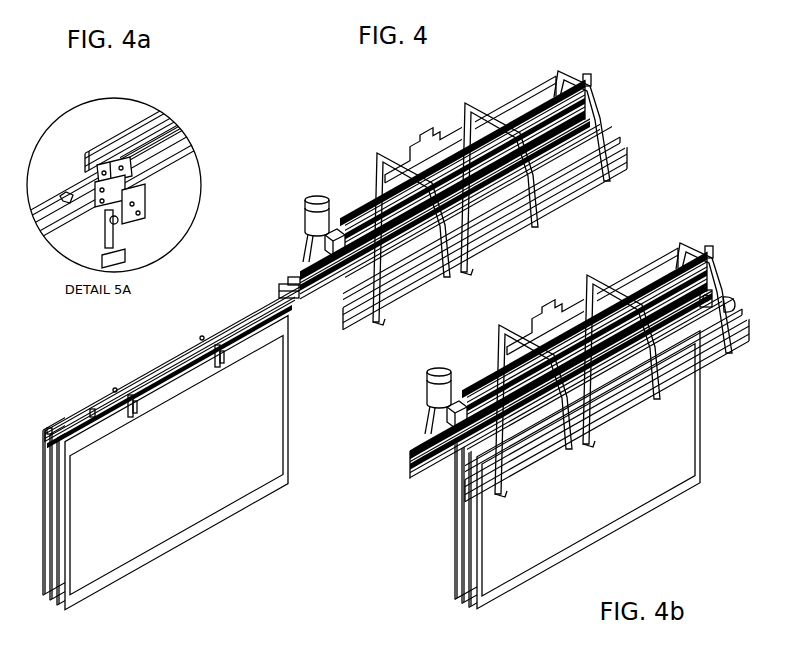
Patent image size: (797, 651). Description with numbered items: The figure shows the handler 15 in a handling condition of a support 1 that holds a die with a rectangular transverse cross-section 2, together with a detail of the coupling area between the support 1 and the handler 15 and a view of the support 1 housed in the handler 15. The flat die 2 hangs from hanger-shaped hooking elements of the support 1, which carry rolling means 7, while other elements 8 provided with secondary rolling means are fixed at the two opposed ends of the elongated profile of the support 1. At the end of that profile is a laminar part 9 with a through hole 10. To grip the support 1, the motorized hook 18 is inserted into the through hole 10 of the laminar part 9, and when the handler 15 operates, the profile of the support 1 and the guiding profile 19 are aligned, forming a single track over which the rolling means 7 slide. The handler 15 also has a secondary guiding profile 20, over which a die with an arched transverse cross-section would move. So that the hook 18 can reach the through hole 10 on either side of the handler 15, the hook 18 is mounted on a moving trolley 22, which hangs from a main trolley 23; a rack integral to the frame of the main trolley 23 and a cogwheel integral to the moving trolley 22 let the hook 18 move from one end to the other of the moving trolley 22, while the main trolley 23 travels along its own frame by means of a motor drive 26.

In FIG. 4, the support 1 is at (81, 402).
In FIG. 4, the die with a rectangular transverse cross-section 2 is at (171, 528).
In FIG. 4B, the die with a rectangular transverse cross-section 2 is at (621, 498).
In FIG. 4A, the rolling means 7 is at (61, 190).
In FIG. 4A, the elements provided with secondary rolling means 8 is at (116, 239).
In FIG. 4A, the laminar part 9 is at (147, 212).
In FIG. 4A, the through hole 10 is at (150, 196).
In FIG. 4, the handler 15 is at (377, 131).
In FIG. 4A, the hook 18 is at (97, 180).
In FIG. 4B, the hook 18 is at (734, 301).
In FIG. 4B, the guiding profile 19 is at (451, 469).
In FIG. 4, the secondary guiding profile 20 is at (409, 294).
In FIG. 4B, the secondary guiding profile 20 is at (404, 463).
In FIG. 4A, the moving trolley 22 is at (124, 125).
In FIG. 4, the moving trolley 22 is at (290, 276).
In FIG. 4, the main trolley 23 is at (537, 101).
In FIG. 4, the motor drive 26 is at (309, 196).